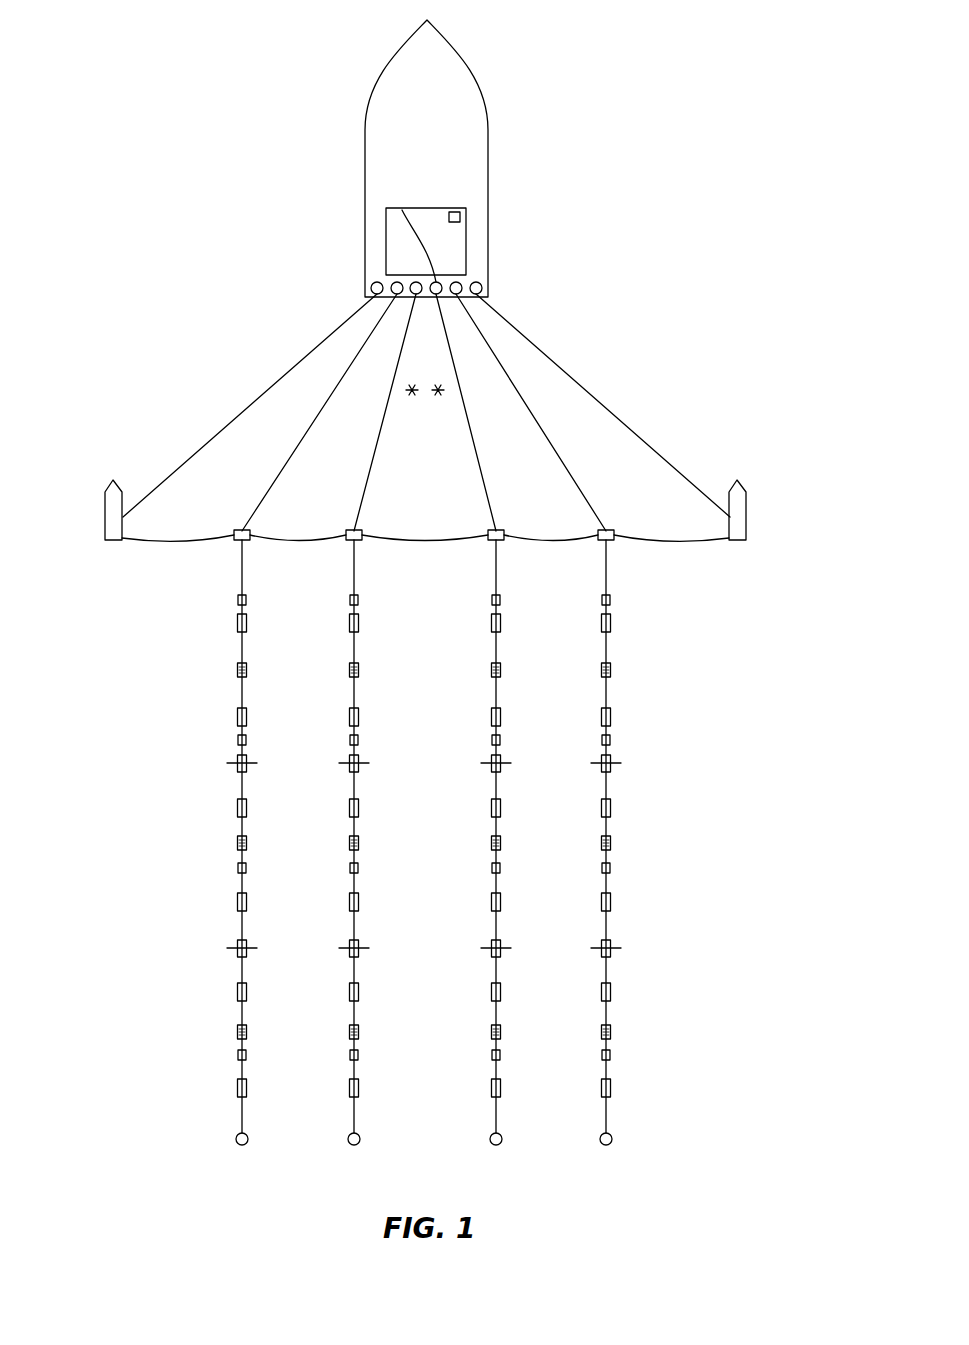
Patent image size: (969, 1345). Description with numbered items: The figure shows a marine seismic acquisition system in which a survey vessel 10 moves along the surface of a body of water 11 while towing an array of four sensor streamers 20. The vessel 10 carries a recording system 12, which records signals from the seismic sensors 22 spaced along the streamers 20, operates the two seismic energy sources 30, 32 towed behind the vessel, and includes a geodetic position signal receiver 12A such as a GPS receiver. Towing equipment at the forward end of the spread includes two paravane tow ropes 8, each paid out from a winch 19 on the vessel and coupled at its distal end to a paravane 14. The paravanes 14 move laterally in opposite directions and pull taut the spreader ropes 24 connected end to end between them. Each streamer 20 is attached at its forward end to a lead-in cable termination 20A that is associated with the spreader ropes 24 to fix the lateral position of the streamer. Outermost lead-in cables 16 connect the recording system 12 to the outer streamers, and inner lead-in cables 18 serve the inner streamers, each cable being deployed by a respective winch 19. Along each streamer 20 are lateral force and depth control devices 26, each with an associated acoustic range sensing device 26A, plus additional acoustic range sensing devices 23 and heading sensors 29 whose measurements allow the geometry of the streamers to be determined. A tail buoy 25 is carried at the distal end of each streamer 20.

The paravane tow rope 8 is at (268, 388).
The survey vessel 10 is at (490, 133).
The body of water 11 is at (748, 290).
The recording system 12 is at (448, 246).
The geodetic position signal receiver 12A is at (463, 217).
The paravane 14 is at (104, 512).
The outermost lead-in cable 16 is at (291, 456).
The inner lead-in cable 18 is at (372, 460).
The winch 19 is at (416, 282).
The sensor streamer 20 is at (238, 575).
The lead-in cable termination 20A is at (237, 529).
The seismic sensor 22 is at (237, 623).
The acoustic range sensing device 23 is at (237, 670).
The spreader rope 24 is at (298, 538).
The tail buoy 25 is at (240, 1147).
The lateral force and depth control device 26 is at (237, 757).
The acoustic range sensing device 26A is at (652, 940).
The heading sensor 29 is at (237, 868).
The seismic energy source 30 is at (404, 388).
The seismic energy source 32 is at (446, 388).